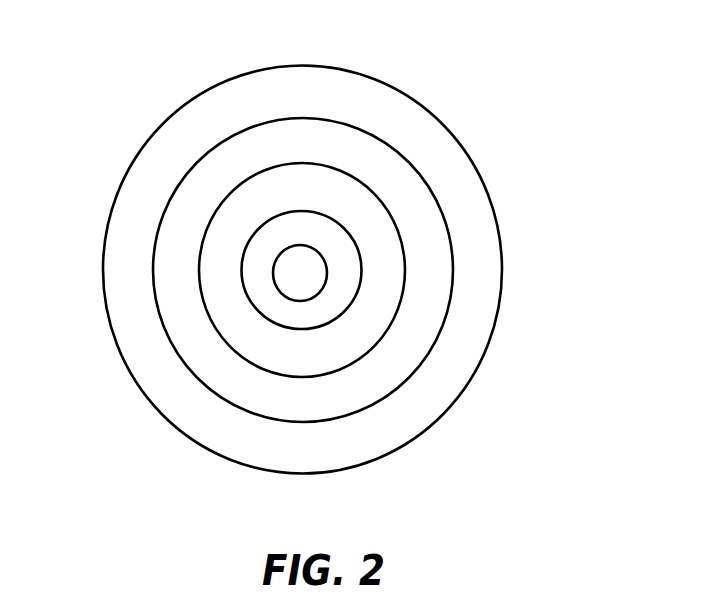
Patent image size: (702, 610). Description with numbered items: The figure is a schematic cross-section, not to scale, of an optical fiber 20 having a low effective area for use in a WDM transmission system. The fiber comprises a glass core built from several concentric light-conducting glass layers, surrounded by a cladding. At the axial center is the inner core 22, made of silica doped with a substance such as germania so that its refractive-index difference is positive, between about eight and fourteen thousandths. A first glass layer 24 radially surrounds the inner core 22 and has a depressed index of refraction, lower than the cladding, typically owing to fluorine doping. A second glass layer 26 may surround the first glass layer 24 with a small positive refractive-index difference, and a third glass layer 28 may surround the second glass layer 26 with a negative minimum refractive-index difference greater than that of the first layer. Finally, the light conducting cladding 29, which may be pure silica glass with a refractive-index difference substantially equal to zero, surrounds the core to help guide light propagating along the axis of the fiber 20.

The optical fiber 20 is at (326, 288).
The inner core 22 is at (383, 176).
The first glass layer 24 is at (414, 251).
The second glass layer 26 is at (381, 300).
The third glass layer 28 is at (260, 267).
The cladding 29 is at (301, 259).